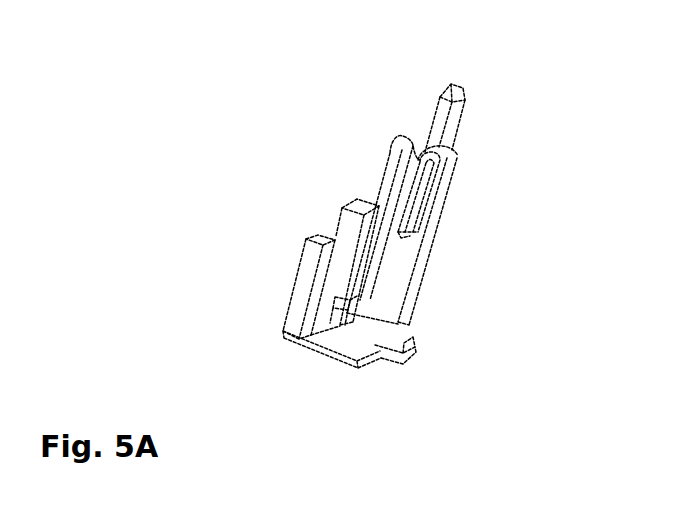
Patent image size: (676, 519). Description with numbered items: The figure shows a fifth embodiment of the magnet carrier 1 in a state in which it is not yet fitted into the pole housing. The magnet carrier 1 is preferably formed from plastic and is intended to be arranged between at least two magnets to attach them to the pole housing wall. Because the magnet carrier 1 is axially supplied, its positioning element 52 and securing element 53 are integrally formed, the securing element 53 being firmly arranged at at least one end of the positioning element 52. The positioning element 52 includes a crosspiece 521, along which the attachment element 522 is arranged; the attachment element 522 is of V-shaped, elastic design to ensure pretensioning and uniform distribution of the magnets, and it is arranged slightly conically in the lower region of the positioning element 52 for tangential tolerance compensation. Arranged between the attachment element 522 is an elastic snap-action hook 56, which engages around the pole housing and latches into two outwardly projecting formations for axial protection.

The magnet carrier 1 is at (212, 138).
The securing element 53 is at (304, 266).
The positioning element 52 is at (428, 268).
The snap-action hook 56 is at (432, 200).
The attachment element 522 is at (407, 318).
The crosspiece 521 is at (355, 303).